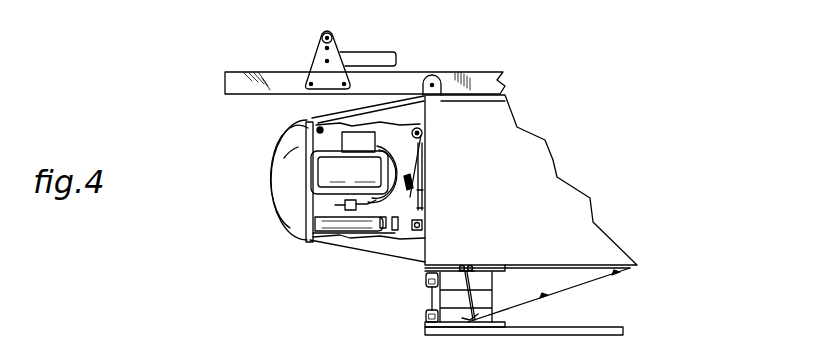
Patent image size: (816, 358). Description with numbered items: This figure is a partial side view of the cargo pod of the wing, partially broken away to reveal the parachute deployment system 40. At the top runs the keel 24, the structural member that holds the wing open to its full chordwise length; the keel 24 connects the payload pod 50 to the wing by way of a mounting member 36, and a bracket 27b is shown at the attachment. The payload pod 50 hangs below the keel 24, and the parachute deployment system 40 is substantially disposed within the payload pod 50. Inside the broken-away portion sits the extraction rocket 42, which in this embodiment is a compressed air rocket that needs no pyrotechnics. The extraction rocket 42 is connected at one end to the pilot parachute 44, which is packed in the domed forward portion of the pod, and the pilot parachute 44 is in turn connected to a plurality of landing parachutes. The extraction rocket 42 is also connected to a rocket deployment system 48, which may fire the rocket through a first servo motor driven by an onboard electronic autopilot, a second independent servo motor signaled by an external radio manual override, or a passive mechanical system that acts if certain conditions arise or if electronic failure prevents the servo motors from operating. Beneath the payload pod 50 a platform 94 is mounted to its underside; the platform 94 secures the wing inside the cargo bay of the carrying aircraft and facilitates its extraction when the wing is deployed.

The mounting member 36 is at (483, 80).
The triangular bracket 27b is at (322, 60).
The keel 24 is at (378, 53).
The payload pod 50 is at (500, 199).
The parachute deployment system 40 is at (281, 216).
The pilot parachute 44 is at (310, 172).
The extraction rocket 42 is at (313, 220).
The rocket deployment system 48 is at (383, 231).
The platform 94 is at (426, 292).